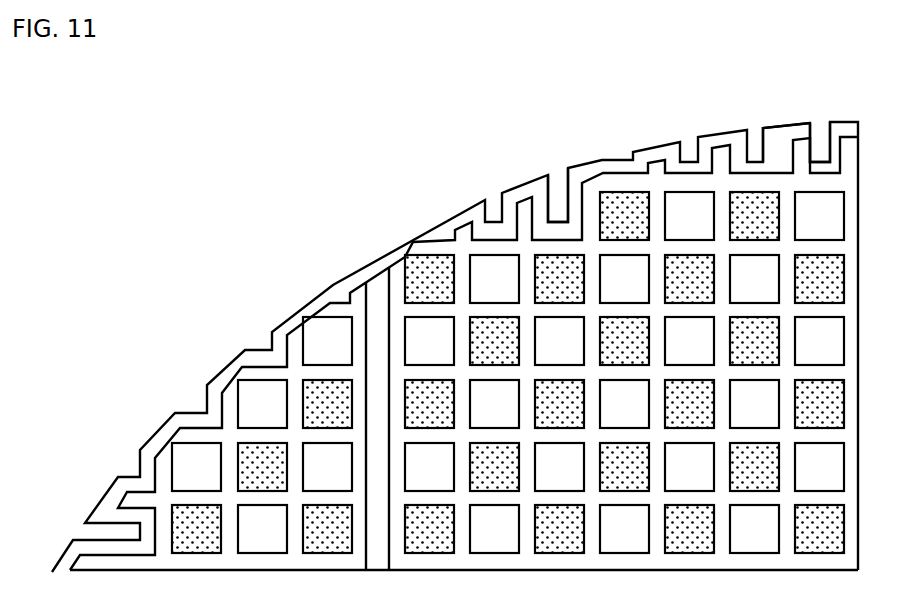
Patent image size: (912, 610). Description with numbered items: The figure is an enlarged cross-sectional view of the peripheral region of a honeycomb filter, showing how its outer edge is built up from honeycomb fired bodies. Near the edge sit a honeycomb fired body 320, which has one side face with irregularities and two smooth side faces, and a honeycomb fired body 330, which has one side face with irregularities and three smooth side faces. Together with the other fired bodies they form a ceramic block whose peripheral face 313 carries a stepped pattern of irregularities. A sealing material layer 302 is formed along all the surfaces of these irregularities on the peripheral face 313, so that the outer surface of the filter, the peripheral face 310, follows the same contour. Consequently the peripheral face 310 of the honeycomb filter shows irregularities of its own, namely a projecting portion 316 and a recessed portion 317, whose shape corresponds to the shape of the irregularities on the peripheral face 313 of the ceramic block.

The sealing material layer 302 is at (372, 267).
The peripheral face of the honeycomb filter 310 is at (262, 350).
The peripheral face of the ceramic block 313 is at (817, 162).
The projecting portion 316 is at (790, 124).
The recessed portion 317 is at (567, 222).
The honeycomb fired body 320 is at (187, 460).
The honeycomb fired body 330 is at (682, 223).